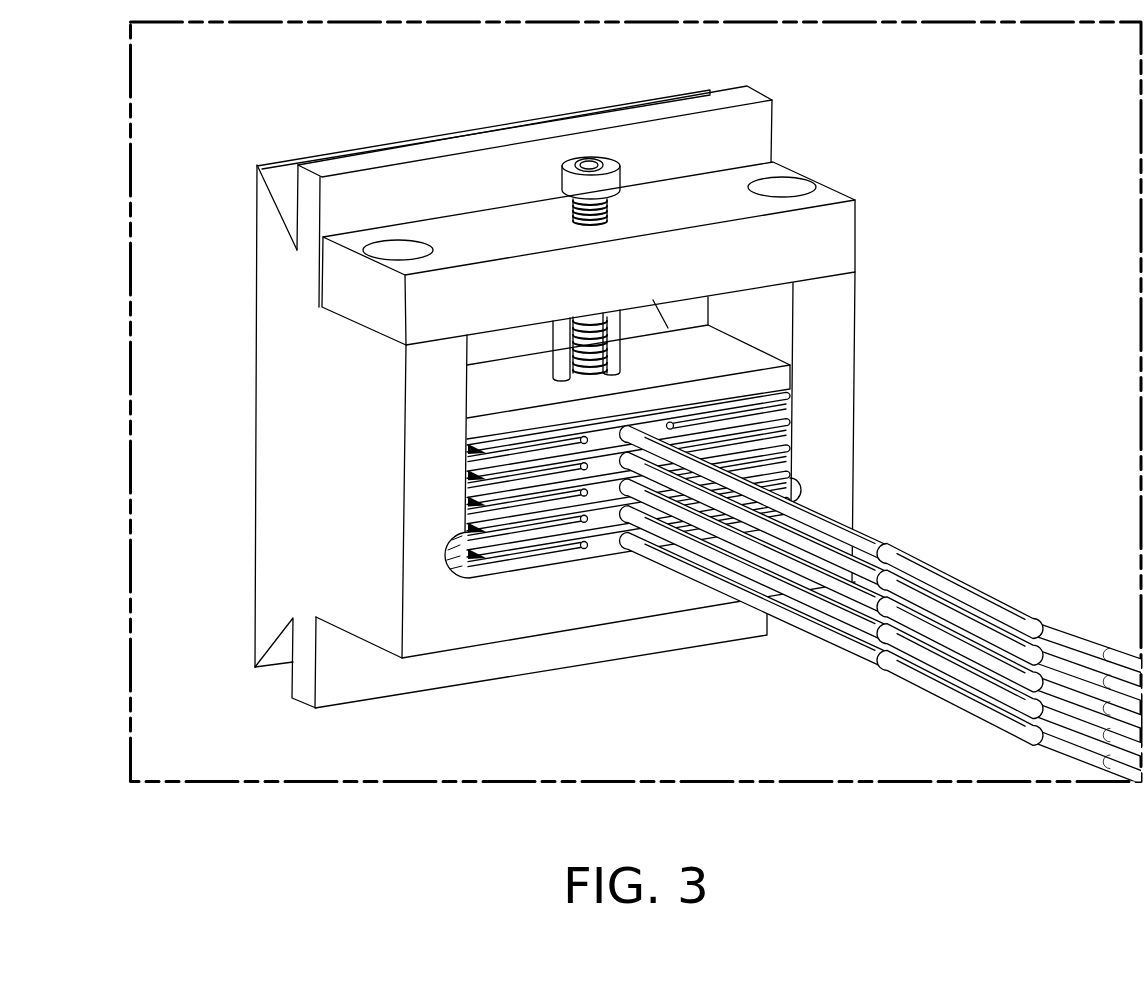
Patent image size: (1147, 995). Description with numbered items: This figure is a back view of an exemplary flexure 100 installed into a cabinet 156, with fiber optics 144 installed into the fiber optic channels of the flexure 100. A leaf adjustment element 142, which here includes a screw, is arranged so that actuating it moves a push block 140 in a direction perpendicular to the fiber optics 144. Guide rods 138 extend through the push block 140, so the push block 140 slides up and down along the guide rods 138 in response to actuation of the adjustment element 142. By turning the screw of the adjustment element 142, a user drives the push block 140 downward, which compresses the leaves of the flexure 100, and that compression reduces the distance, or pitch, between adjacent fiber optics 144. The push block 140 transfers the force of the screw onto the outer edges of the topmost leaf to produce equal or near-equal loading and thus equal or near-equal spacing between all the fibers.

The flexure 100 is at (603, 542).
The guide rods 138 is at (556, 340).
The push block 140 is at (716, 357).
The adjustment element 142 is at (611, 161).
The fiber optics 144 is at (937, 576).
The cabinet 156 is at (312, 510).